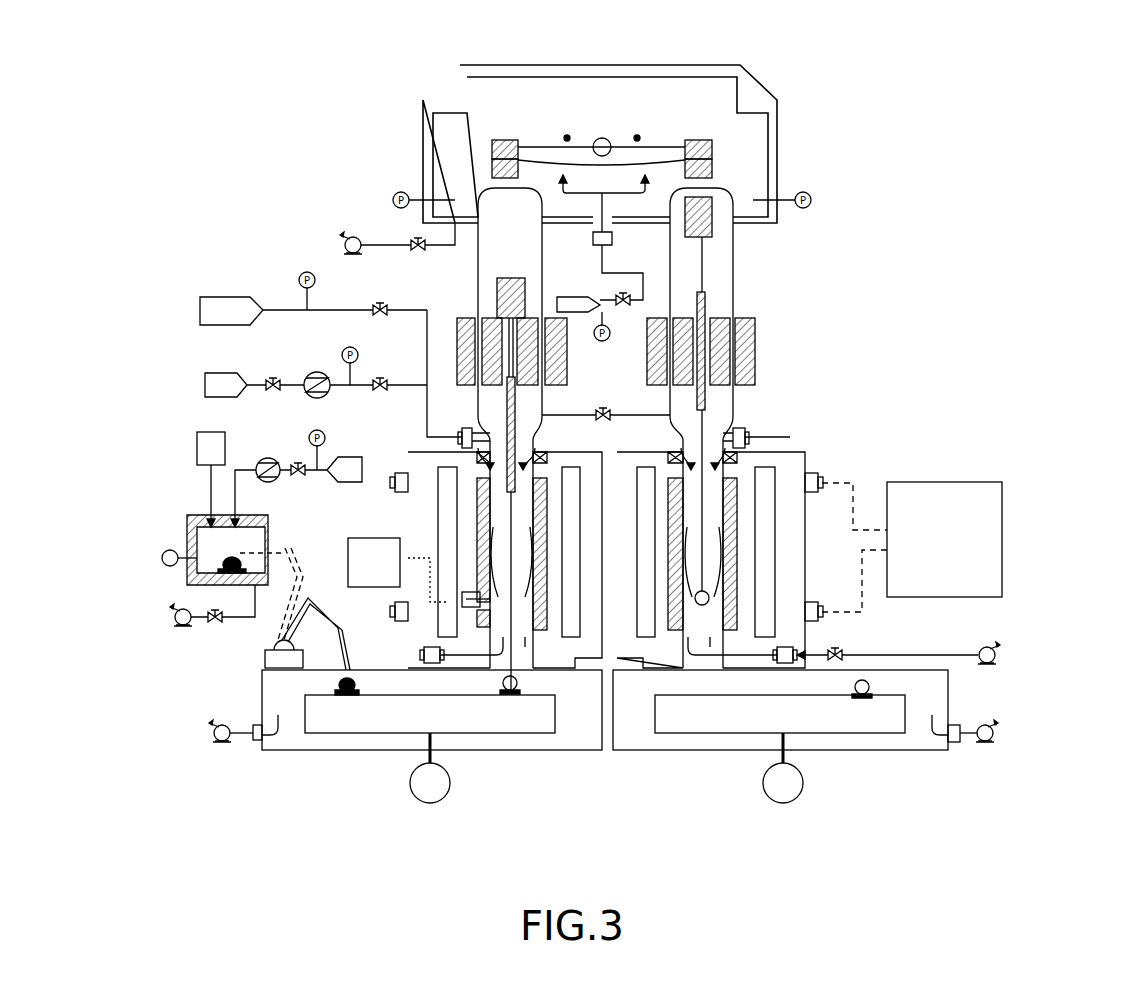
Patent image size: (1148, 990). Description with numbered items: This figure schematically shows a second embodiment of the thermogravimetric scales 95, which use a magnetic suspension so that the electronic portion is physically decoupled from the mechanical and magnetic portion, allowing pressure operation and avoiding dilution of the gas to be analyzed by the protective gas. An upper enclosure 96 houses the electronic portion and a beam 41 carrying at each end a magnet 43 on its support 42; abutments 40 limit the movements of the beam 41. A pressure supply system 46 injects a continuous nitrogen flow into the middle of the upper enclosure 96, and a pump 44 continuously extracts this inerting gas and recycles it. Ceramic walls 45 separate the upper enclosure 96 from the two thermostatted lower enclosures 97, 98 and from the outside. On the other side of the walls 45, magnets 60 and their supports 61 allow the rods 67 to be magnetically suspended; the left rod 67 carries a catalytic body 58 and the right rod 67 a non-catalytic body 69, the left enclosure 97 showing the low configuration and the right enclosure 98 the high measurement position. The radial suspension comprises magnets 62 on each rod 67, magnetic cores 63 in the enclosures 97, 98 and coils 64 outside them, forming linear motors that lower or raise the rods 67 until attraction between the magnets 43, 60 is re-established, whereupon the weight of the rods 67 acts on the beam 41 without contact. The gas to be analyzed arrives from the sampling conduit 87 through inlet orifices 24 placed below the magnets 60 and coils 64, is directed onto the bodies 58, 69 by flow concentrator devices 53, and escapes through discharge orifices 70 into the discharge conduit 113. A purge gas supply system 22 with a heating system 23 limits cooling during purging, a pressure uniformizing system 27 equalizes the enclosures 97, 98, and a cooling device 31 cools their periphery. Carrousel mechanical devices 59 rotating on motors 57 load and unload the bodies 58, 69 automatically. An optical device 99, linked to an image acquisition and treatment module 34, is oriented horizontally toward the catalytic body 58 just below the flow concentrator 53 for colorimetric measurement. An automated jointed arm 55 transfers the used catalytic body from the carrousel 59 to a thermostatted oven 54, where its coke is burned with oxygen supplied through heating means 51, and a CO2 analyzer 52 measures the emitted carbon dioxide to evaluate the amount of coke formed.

The purge gas supply system 22 is at (205, 385).
The heating system 23 is at (317, 372).
The inlet orifice 24 is at (462, 432).
The pressure uniformizing system 27 is at (603, 410).
The cooling device 31 is at (936, 551).
The image acquisition and treatment module 34 is at (365, 560).
The abutments 40 is at (637, 138).
The beam 41 is at (545, 150).
The magnet support 42 is at (492, 147).
The magnet 43 is at (492, 170).
The pump 44 is at (353, 237).
The ceramic walls 45 is at (478, 283).
The pressure supply system 46 is at (620, 283).
The heating means 51 is at (272, 458).
The CO2 analyzer 52 is at (197, 448).
The flow concentrator device 53 is at (490, 543).
The thermostatted oven 54 is at (187, 538).
The automated jointed arm 55 is at (336, 612).
The motor 57 is at (423, 790).
The catalytic body 58 is at (520, 690).
The carrousel mechanical device 59 is at (421, 721).
The magnet 60 is at (508, 278).
The magnet support 61 is at (712, 225).
The magnet 62 is at (705, 300).
The magnetic core 63 is at (710, 330).
The coil 64 is at (755, 362).
The suspension rod 67 is at (513, 503).
The non-catalytic body 69 is at (709, 598).
The discharge orifice 70 is at (415, 652).
The sampling conduit 87 is at (287, 310).
The thermogravimetric scales 95 is at (882, 290).
The upper enclosure 96 is at (587, 65).
The left thermostatted lower enclosure 97 is at (478, 258).
The right thermostatted lower enclosure 98 is at (732, 265).
The optical device 99 is at (480, 600).
The discharge conduit 113 is at (942, 652).